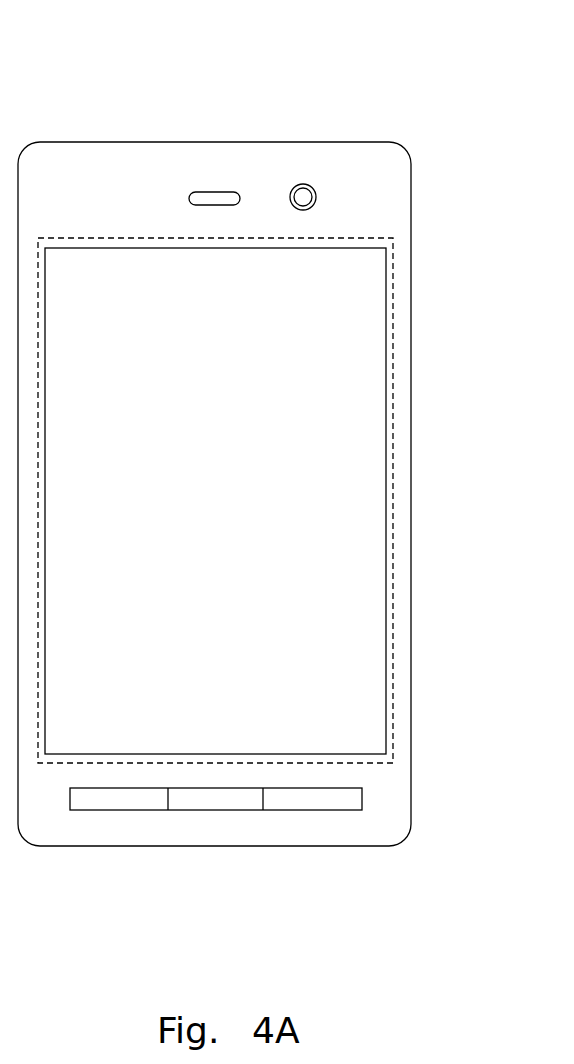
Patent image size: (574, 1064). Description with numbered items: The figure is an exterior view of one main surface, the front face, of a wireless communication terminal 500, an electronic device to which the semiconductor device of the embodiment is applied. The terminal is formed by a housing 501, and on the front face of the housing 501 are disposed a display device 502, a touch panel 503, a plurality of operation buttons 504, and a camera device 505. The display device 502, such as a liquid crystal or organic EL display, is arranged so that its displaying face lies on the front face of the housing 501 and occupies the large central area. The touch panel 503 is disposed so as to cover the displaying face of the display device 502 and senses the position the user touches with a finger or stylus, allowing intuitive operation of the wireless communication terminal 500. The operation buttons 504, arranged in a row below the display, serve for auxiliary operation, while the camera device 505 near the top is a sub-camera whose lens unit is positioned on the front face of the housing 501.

The wireless communication terminal 500 is at (250, 428).
The housing 501 is at (68, 142).
The display device 502 is at (385, 360).
The touch panel 503 is at (393, 443).
The operation buttons 504 is at (362, 800).
The camera device 505 is at (317, 192).